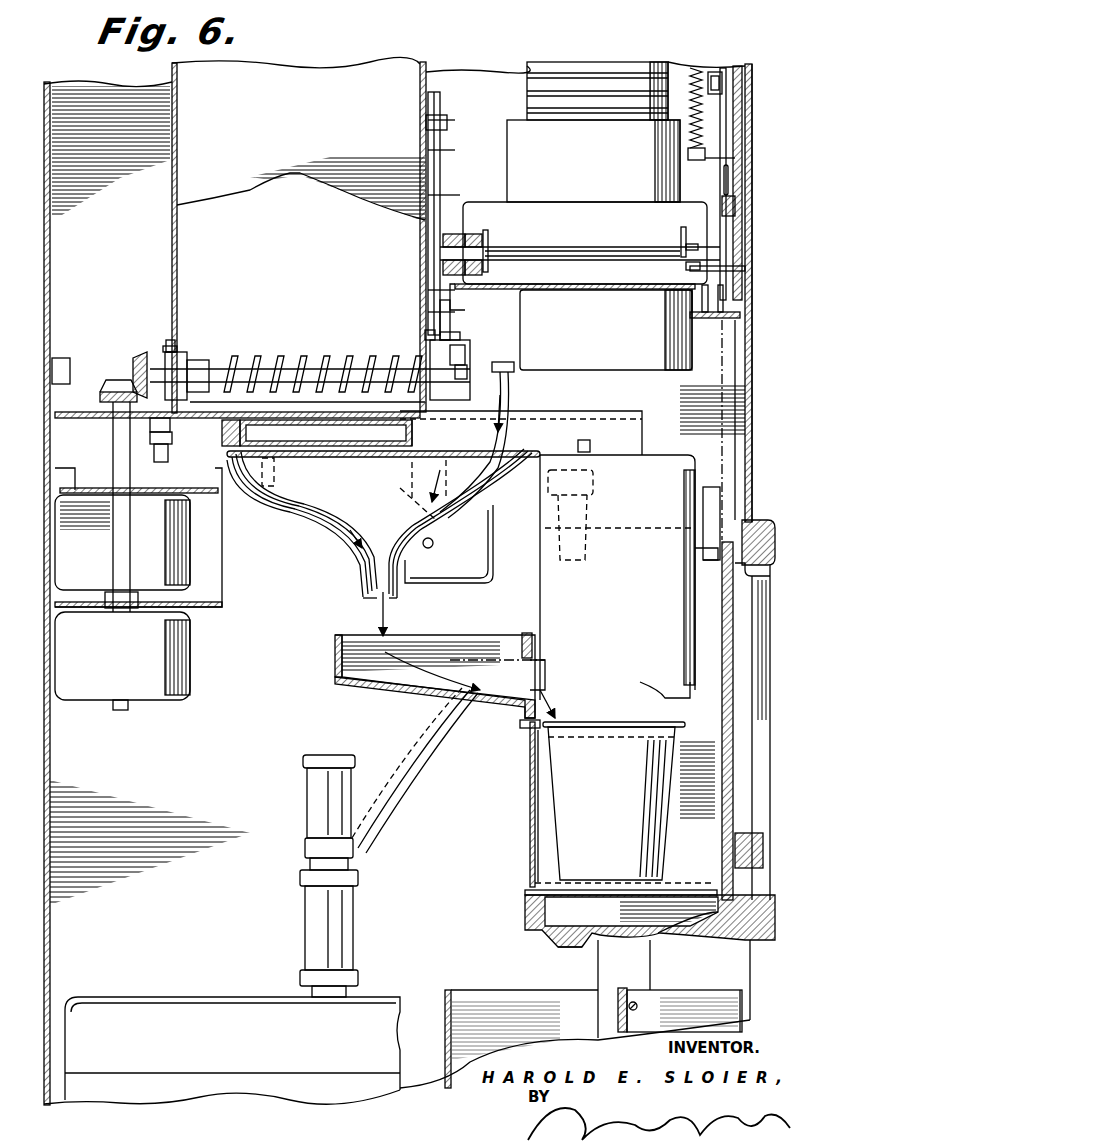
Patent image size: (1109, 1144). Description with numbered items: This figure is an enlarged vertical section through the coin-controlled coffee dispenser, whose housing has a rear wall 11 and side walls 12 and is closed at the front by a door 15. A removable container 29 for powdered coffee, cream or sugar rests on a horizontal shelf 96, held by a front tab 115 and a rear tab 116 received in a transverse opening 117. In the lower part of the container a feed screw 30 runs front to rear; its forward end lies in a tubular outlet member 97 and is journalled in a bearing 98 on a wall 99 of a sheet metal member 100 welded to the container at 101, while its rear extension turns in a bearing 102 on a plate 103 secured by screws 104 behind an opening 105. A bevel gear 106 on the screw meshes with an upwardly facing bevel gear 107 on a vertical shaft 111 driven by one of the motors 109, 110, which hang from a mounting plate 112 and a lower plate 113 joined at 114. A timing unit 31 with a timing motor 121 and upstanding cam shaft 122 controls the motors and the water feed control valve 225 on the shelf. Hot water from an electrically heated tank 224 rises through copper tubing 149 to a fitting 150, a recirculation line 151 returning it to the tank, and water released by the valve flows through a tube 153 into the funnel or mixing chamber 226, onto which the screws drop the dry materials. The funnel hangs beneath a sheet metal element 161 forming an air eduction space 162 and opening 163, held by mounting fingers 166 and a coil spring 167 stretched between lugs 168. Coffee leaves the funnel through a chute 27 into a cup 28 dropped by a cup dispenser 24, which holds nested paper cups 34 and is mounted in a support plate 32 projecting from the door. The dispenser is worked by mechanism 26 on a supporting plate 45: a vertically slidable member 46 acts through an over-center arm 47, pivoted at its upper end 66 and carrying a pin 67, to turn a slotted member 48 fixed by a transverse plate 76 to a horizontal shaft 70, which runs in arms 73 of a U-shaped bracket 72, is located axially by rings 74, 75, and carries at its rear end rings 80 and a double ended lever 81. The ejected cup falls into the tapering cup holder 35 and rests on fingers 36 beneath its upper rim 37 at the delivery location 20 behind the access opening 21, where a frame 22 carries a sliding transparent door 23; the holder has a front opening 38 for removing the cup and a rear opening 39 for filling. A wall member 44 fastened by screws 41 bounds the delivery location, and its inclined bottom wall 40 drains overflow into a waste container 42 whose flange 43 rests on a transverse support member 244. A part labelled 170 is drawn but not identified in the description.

The rear wall 11 is at (48, 746).
The side walls 12 is at (284, 718).
The door 15 is at (752, 402).
The discharge location 20 is at (706, 700).
The access opening 21 is at (752, 574).
The rectangular frame 22 is at (752, 546).
The transparent door 23 is at (742, 756).
The cup dispenser 24 is at (523, 153).
The dispenser operating mechanism 26 is at (740, 58).
The chute 27 is at (395, 692).
The cup 28 is at (565, 798).
The removable container 29 is at (378, 66).
The feed screw 30 is at (325, 357).
The timing unit 31 is at (464, 112).
The support plate 32 is at (575, 290).
The paper cups 34 is at (608, 66).
The cup holding element 35 is at (630, 577).
The fingers 36 is at (533, 740).
The upper rim 37 is at (588, 762).
The lower front opening 38 is at (660, 692).
The rear opening 39 is at (546, 676).
The inclined bottom wall 40 is at (600, 926).
The screws 41 is at (548, 945).
The waste container 42 is at (458, 990).
The supporting flange 43 is at (645, 998).
The wall member 44 is at (535, 830).
The supporting plate 45 is at (752, 110).
The vertically slidable member 46 is at (742, 137).
The over center arm 47 is at (740, 160).
The slotted member 48 is at (745, 296).
The upper end of arm 66 is at (722, 80).
The pin 67 is at (736, 208).
The horizontal shaft 70 is at (598, 248).
The U-shaped bracket 72 is at (548, 278).
The bracket arms 73 is at (488, 235).
The ring 74 is at (686, 247).
The forward ring 75 is at (690, 265).
The transverse plate 76 is at (745, 269).
The rear rings 80 is at (472, 236).
The double ended lever 81 is at (456, 234).
The supporting plate 96 is at (317, 433).
The tubular outlet member 97 is at (430, 350).
The forward bearing 98 is at (467, 357).
The bearing wall 99 is at (465, 346).
The sheet metal member 100 is at (460, 336).
The welding 101 is at (440, 336).
The rear bearing 102 is at (185, 358).
The rear plate 103 is at (170, 340).
The screws 104 is at (166, 350).
The opening 105 is at (180, 411).
The bevel gear 106 is at (136, 361).
The upwardly facing bevel gear 107 is at (116, 390).
The intermediate motor 109 is at (186, 682).
The drive motor 110 is at (185, 568).
The vertical shafts 111 is at (115, 541).
The mounting plate 112 is at (195, 488).
The lower plate 113 is at (205, 608).
The attachment location 114 is at (225, 498).
The front tab 115 is at (408, 434).
The rear tab 116 is at (160, 444).
The transverse opening 117 is at (172, 435).
The timing motor 121 is at (452, 583).
The cam shaft 122 is at (442, 171).
The copper tubing 149 is at (408, 774).
The fitting 150 is at (590, 448).
The recirculation line 151 is at (585, 544).
The tube 153 is at (505, 427).
The sheet metal element 161 is at (290, 458).
The air passage 162 is at (279, 432).
The opening 163 is at (392, 474).
The mounting fingers 166 is at (290, 488).
The coil spring 167 is at (426, 549).
The lugs 168 is at (378, 468).
The spring 170 is at (697, 70).
The heated tank 224 is at (90, 1094).
The control valve 225 is at (512, 362).
The funnel 226 is at (342, 545).
The transverse support member 244 is at (640, 990).